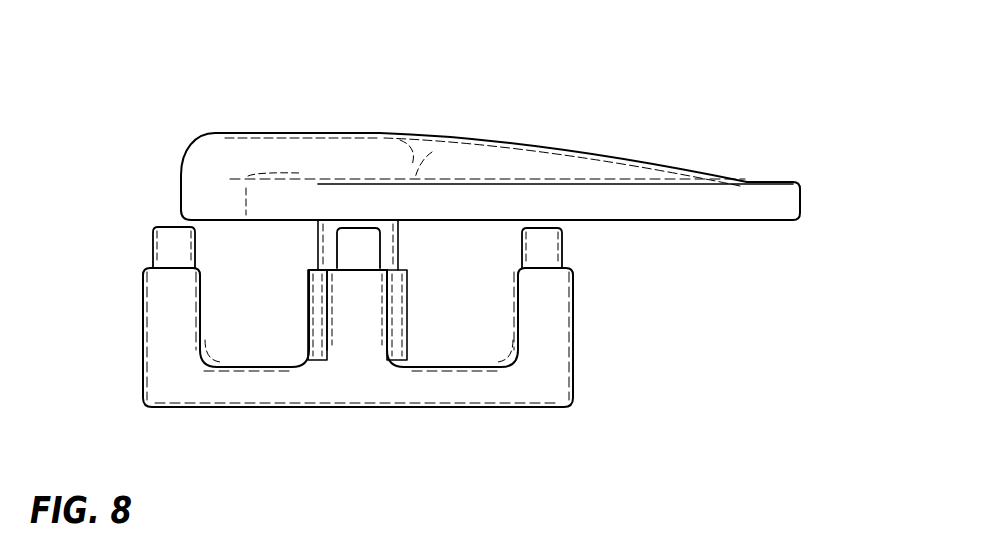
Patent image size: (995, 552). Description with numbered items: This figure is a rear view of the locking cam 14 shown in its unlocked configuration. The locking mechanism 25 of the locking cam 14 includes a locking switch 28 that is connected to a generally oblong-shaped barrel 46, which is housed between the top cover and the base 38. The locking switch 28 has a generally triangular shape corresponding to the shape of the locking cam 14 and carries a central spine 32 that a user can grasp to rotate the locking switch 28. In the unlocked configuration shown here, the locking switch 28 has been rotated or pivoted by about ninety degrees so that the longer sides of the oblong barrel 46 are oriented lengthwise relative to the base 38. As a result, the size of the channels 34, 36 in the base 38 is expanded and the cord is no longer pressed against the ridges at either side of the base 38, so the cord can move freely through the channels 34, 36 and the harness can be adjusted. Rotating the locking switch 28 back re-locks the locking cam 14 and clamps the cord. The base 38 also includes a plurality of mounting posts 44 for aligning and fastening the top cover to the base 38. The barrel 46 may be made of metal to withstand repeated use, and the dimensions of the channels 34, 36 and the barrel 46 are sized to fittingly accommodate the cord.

The locking cam 14 is at (274, 51).
The central spine 32 is at (527, 142).
The locking switch 28 is at (750, 200).
The locking mechanism 25 is at (267, 253).
The mounting posts 44 is at (167, 250).
The base 38 is at (552, 321).
The channel 36 is at (222, 345).
The channel 34 is at (500, 345).
The barrel 46 is at (307, 350).